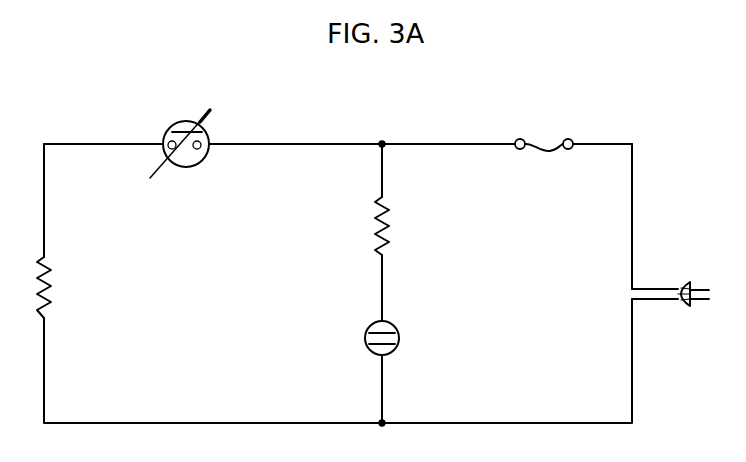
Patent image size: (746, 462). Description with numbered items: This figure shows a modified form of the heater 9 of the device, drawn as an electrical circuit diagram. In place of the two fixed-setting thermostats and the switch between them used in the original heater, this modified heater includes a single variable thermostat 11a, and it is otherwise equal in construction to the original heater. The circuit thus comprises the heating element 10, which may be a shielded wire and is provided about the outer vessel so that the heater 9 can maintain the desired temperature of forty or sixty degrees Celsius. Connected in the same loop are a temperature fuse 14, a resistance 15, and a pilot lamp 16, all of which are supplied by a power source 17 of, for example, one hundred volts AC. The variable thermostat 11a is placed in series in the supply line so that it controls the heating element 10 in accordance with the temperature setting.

The heater 9 is at (308, 140).
The heating element 10 is at (52, 288).
The variable thermostat 11a is at (181, 121).
The temperature fuse 14 is at (547, 141).
The resistance 15 is at (387, 227).
The pilot lamp 16 is at (363, 342).
The power source 17 is at (686, 307).